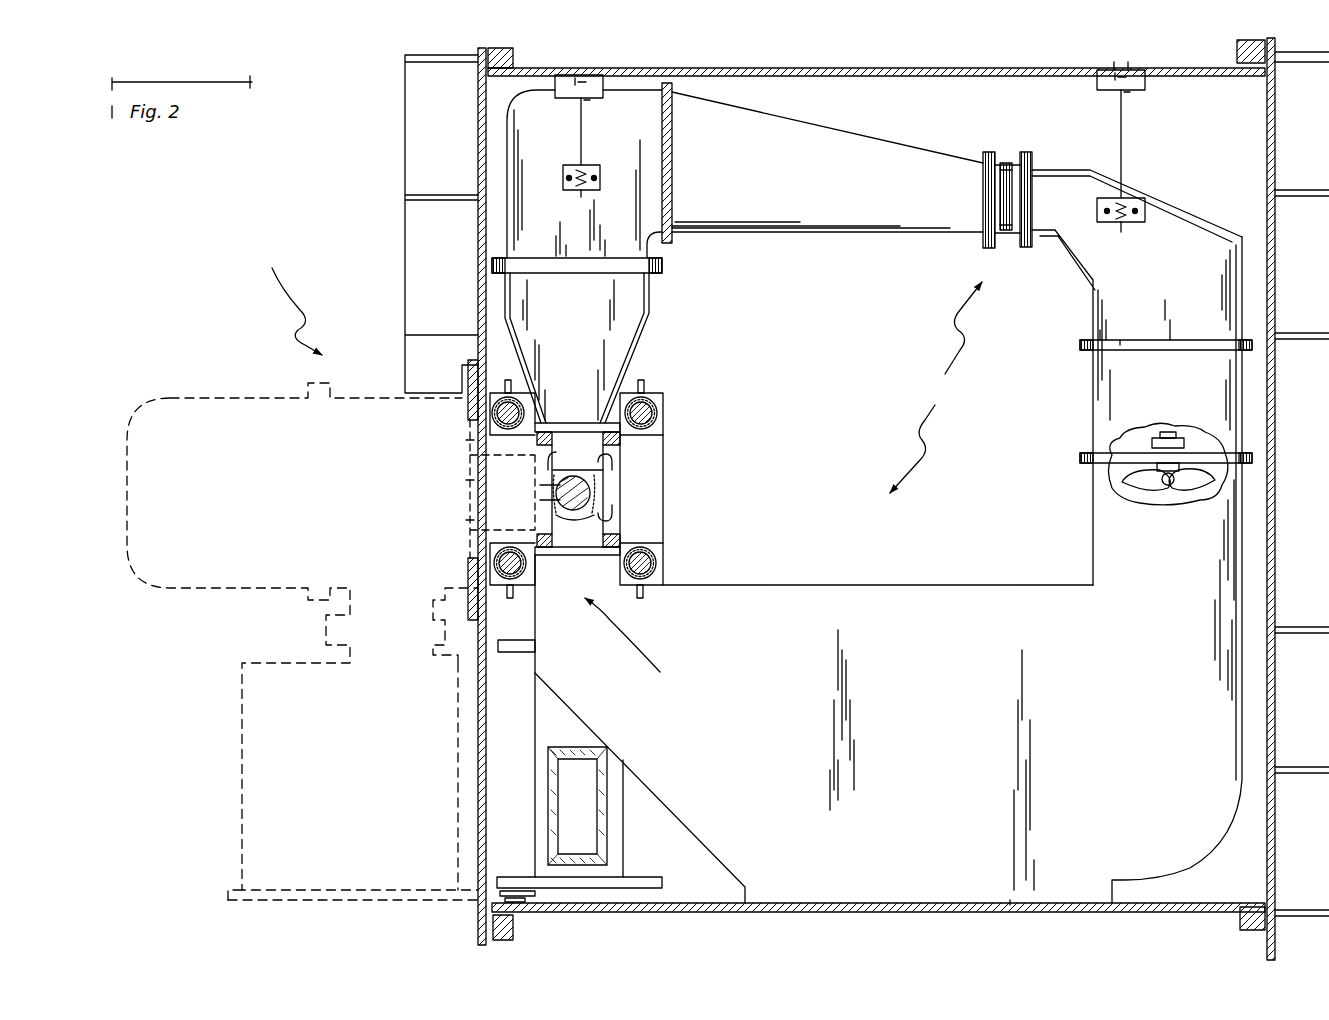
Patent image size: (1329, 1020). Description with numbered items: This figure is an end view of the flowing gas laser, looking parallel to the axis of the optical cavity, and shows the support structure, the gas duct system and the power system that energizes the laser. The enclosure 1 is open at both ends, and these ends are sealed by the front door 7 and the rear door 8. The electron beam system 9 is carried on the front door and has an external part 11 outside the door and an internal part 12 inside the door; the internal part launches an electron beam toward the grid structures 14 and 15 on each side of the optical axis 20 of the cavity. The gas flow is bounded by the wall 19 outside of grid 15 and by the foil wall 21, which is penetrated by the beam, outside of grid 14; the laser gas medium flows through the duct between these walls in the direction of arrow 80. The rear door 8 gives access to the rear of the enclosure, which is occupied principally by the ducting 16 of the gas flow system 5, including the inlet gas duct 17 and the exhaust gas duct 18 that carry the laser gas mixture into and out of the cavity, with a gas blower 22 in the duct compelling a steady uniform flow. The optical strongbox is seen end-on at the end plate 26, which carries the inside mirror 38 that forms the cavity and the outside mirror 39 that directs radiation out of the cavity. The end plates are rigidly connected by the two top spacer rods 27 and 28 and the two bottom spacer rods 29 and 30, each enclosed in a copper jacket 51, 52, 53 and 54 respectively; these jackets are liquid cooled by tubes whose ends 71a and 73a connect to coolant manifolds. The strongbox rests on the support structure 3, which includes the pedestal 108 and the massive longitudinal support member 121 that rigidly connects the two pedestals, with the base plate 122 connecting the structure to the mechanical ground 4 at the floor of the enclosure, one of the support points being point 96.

The enclosure 1 is at (915, 62).
The support structure 3 is at (627, 808).
The mechanical reference or ground 4 is at (870, 903).
The gas flow system 5 is at (936, 387).
The front door 7 is at (404, 50).
The rear door 8 is at (1298, 48).
The electron beam system 9 is at (290, 299).
The external part 11 is at (215, 398).
The internal part 12 is at (480, 520).
The grid structure 14 is at (555, 453).
The grid structure 15 is at (572, 518).
The ducting 16 is at (1093, 540).
The inlet gas duct 17 is at (665, 585).
The exhaust gas duct 18 is at (632, 334).
The wall 19 is at (605, 468).
The optical axis 20 is at (592, 493).
The foil wall 21 is at (555, 485).
The gas blower 22 is at (1117, 438).
The end plate 26 is at (663, 443).
The top spacer rod 27 is at (478, 435).
The top spacer rod 28 is at (655, 415).
The bottom spacer rod 29 is at (468, 572).
The bottom spacer rod 30 is at (640, 598).
The inside mirror 38 is at (594, 503).
The outside mirror 39 is at (572, 555).
The copper jacket 51 is at (516, 392).
The copper jacket 52 is at (663, 396).
The copper jacket 53 is at (522, 598).
The copper jacket 54 is at (655, 548).
The cooling tube end 71a is at (468, 402).
The cooling tube end 73a is at (505, 600).
The gas flow arrow 80 is at (600, 645).
The support point 96 is at (560, 900).
The pedestal 108 is at (528, 725).
The longitudinal support member 121 is at (607, 768).
The base plate 122 is at (640, 877).